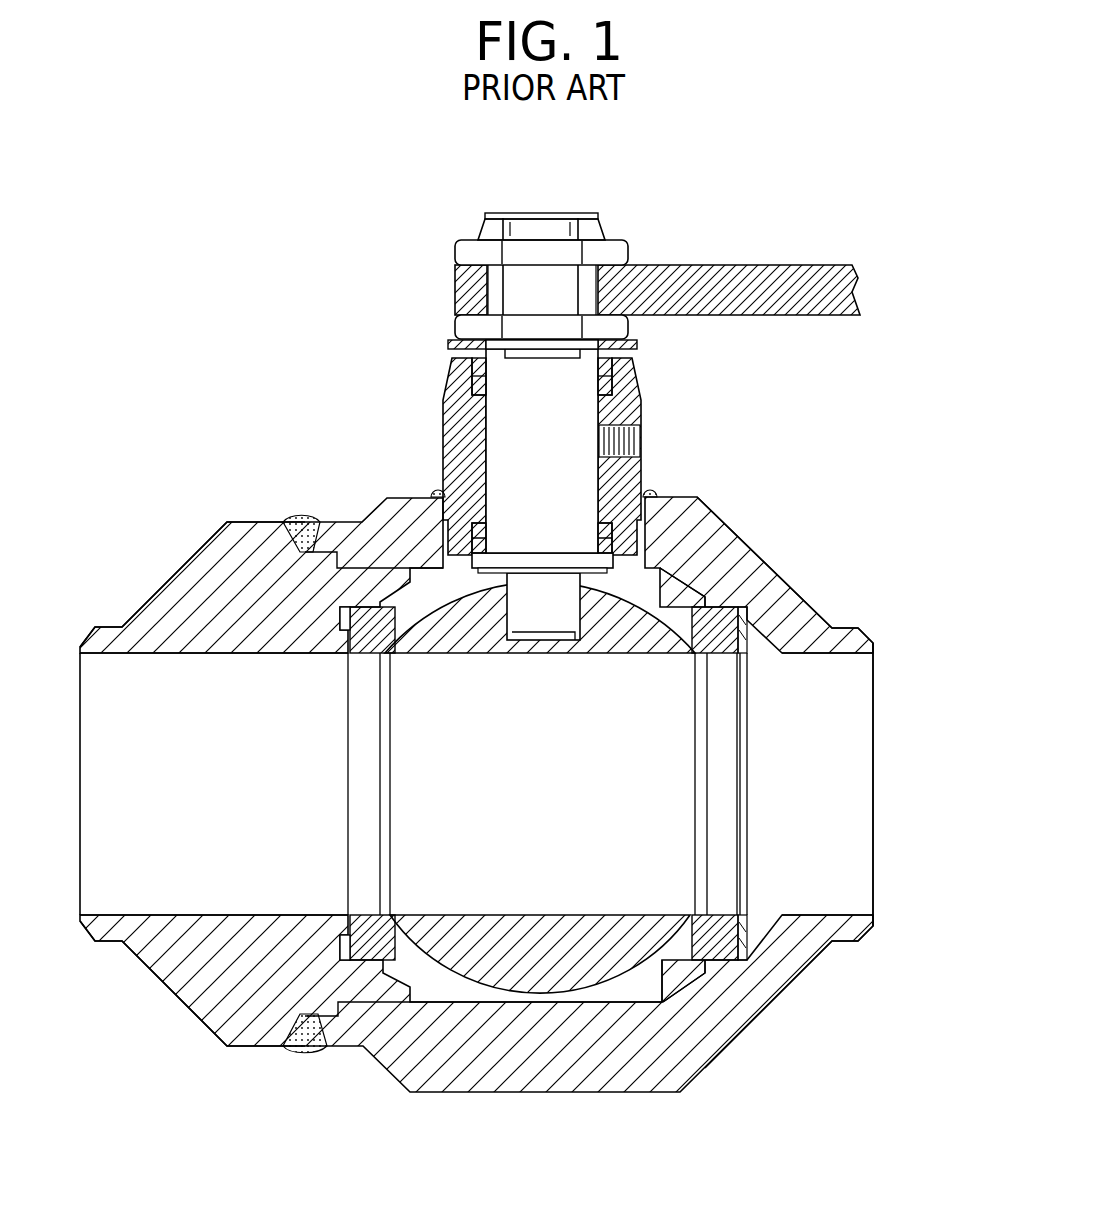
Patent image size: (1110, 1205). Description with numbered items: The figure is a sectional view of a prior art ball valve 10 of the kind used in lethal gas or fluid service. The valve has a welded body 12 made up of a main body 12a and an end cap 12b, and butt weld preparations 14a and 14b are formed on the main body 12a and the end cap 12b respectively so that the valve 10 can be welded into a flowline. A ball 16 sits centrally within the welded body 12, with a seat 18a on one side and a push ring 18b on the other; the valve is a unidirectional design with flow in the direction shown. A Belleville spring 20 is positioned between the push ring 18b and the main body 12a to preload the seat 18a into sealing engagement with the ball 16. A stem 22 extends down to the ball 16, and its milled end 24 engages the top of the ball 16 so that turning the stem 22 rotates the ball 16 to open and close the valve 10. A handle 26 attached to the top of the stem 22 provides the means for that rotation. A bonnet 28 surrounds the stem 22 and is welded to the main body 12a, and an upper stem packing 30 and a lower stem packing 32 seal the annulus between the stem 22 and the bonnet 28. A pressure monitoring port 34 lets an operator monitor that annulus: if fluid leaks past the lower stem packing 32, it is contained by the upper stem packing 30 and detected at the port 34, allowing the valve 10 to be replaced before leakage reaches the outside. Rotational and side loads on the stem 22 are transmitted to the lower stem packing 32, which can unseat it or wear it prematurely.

The ball valve 10 is at (268, 396).
The welded body 12 is at (378, 1064).
The main body 12a is at (795, 590).
The end cap 12b is at (212, 543).
The butt weld preparation 14a is at (845, 630).
The butt weld preparation 14b is at (90, 932).
The ball 16 is at (625, 965).
The seat 18a is at (362, 972).
The push ring 18b is at (720, 962).
The Belleville spring 20 is at (746, 926).
The stem 22 is at (484, 440).
The milled end 24 is at (600, 604).
The handle 26 is at (666, 266).
The bonnet 28 is at (452, 380).
The upper stem packing 30 is at (614, 384).
The lower stem packing 32 is at (614, 542).
The pressure monitoring port 34 is at (640, 442).